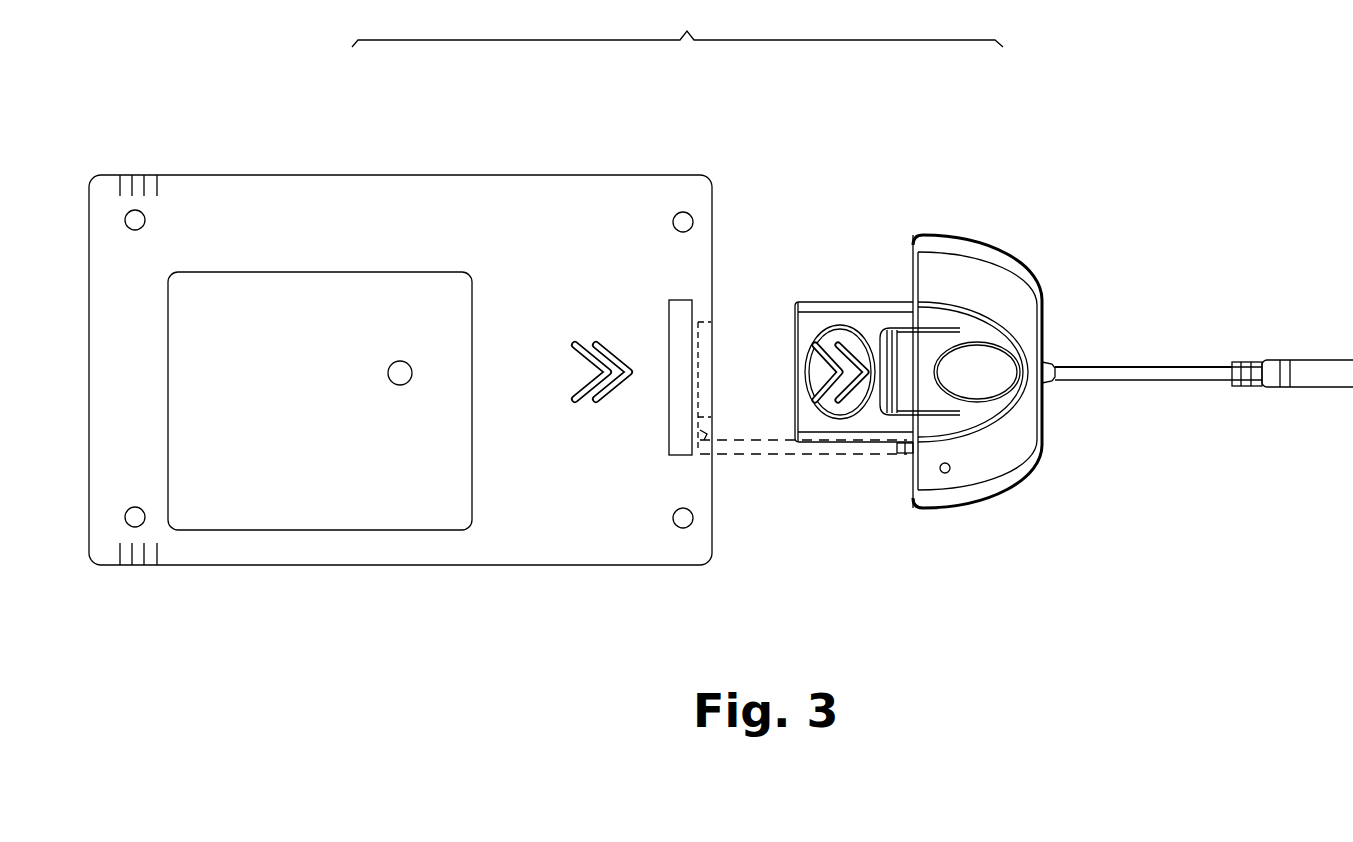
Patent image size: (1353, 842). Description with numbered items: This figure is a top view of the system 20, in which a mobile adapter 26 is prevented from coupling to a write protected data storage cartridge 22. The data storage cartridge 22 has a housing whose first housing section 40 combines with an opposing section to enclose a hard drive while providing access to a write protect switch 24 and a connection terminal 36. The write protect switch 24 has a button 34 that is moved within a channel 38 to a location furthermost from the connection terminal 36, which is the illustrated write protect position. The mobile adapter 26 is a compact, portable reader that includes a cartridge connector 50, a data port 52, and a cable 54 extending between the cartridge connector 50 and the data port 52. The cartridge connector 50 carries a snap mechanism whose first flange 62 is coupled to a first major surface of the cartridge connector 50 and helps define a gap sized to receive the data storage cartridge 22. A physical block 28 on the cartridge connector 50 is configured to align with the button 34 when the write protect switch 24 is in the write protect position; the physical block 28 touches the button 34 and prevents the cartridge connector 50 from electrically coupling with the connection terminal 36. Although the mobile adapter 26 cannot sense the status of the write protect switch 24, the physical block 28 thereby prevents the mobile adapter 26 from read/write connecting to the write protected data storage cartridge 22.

The system 20 is at (677, 23).
The data storage cartridge 22 is at (444, 175).
The write protect switch 24 is at (692, 443).
The mobile adapter 26 is at (1160, 200).
The physical block 28 is at (903, 456).
The button 34 is at (705, 453).
The connection terminal 36 is at (716, 348).
The channel 38 is at (706, 434).
The first housing section 40 is at (627, 190).
The cartridge connector 50 is at (986, 230).
The data port 52 is at (1330, 360).
The cable 54 is at (1138, 365).
The first flange 62 is at (823, 302).